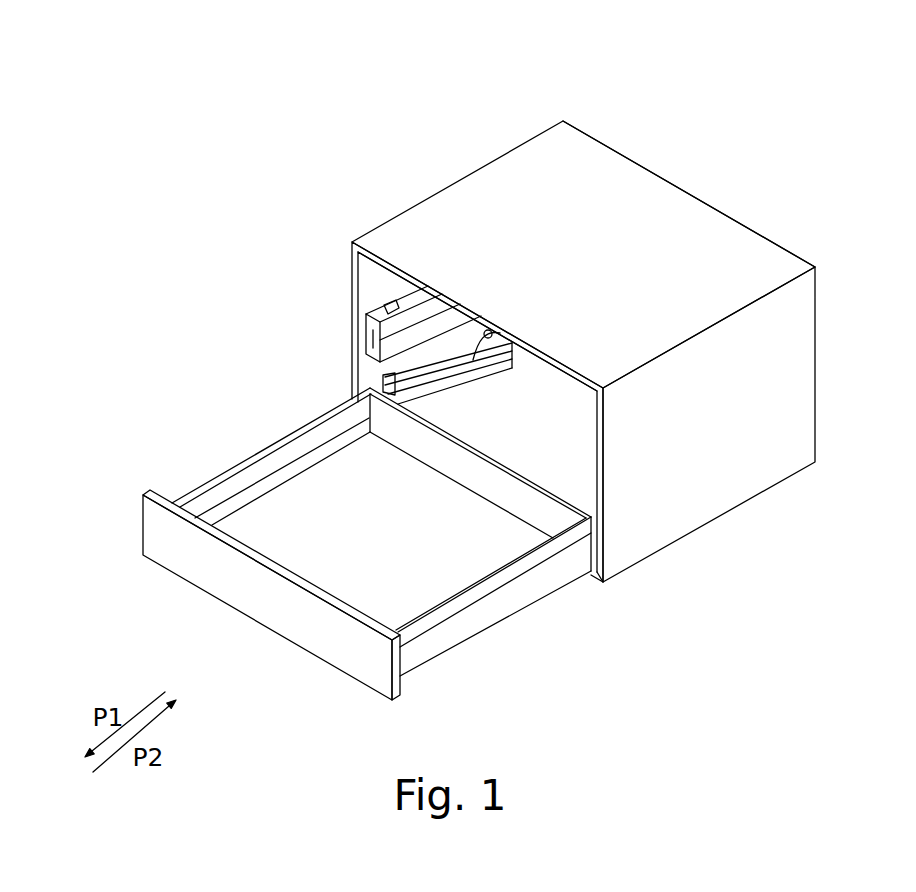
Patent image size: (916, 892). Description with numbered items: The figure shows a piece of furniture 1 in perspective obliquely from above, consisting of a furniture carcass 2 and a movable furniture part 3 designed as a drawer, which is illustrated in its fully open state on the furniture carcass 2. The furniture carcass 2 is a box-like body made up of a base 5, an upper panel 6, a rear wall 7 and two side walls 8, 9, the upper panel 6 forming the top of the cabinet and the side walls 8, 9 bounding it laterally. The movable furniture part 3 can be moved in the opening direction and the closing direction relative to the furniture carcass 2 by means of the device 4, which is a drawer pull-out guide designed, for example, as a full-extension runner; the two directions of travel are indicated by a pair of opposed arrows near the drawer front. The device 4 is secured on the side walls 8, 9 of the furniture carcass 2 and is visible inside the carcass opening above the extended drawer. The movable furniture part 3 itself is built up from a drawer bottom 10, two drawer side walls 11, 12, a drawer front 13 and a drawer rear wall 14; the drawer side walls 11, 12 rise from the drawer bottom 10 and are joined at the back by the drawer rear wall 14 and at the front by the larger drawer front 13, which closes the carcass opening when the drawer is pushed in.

The piece of furniture 1 is at (858, 162).
The furniture carcass 2 is at (524, 106).
The movable furniture part 3 is at (172, 603).
The device 4 is at (368, 308).
The base 5 is at (531, 433).
The upper panel 6 is at (578, 283).
The rear wall 7 is at (733, 207).
The side wall 8 is at (699, 450).
The side wall 9 is at (427, 187).
The drawer bottom 10 is at (362, 538).
The drawer side wall 11 is at (468, 621).
The drawer side wall 12 is at (265, 472).
The drawer front 13 is at (274, 606).
The drawer rear wall 14 is at (507, 496).